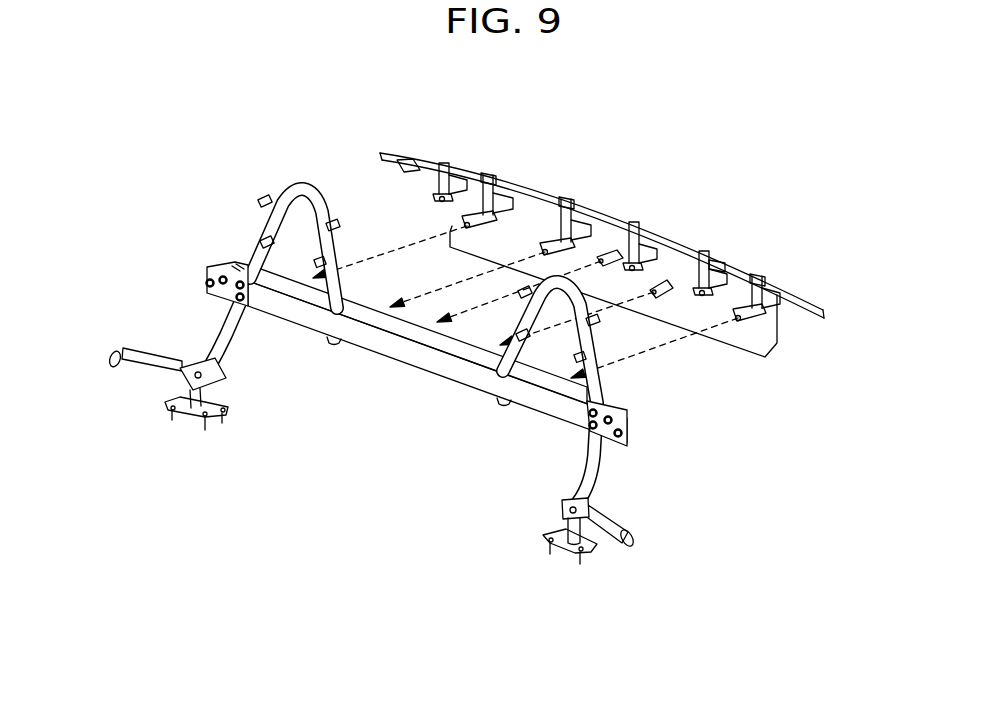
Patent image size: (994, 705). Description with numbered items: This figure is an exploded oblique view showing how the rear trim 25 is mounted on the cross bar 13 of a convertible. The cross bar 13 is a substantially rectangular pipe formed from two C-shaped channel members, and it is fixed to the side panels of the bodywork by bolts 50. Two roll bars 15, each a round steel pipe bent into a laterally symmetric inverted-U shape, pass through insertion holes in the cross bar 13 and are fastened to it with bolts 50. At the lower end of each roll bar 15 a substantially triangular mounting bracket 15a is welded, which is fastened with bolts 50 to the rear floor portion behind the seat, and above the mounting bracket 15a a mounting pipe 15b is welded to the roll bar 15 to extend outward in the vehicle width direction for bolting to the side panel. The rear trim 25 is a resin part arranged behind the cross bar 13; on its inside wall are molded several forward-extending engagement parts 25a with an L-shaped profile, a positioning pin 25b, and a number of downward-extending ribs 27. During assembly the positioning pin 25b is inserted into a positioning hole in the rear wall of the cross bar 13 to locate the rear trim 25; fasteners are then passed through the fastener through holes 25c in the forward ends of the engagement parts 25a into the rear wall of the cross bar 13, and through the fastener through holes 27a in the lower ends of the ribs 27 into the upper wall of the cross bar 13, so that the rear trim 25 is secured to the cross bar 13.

The cross bar 13 is at (372, 348).
The roll bar 15 is at (303, 183).
The mounting bracket 15a is at (226, 413).
The mounting pipe 15b is at (180, 365).
The rear trim 25 is at (538, 192).
The engagement part 25a is at (513, 187).
The positioning pin 25b is at (601, 245).
The fastener through hole 25c is at (462, 224).
The rib 27 is at (724, 284).
The fastener through hole 27a is at (700, 294).
The bolt 50 is at (369, 454).